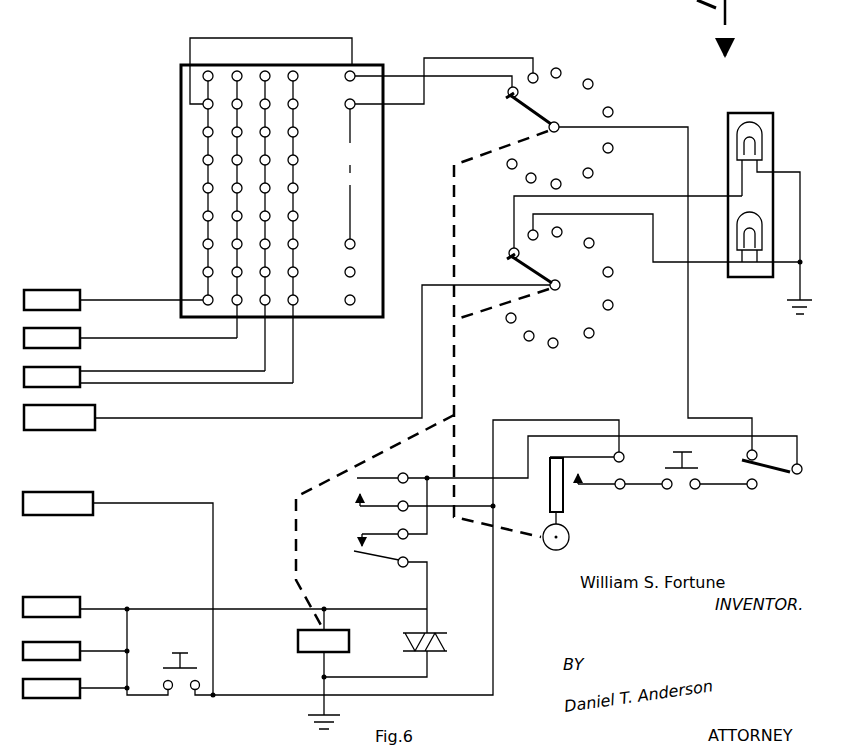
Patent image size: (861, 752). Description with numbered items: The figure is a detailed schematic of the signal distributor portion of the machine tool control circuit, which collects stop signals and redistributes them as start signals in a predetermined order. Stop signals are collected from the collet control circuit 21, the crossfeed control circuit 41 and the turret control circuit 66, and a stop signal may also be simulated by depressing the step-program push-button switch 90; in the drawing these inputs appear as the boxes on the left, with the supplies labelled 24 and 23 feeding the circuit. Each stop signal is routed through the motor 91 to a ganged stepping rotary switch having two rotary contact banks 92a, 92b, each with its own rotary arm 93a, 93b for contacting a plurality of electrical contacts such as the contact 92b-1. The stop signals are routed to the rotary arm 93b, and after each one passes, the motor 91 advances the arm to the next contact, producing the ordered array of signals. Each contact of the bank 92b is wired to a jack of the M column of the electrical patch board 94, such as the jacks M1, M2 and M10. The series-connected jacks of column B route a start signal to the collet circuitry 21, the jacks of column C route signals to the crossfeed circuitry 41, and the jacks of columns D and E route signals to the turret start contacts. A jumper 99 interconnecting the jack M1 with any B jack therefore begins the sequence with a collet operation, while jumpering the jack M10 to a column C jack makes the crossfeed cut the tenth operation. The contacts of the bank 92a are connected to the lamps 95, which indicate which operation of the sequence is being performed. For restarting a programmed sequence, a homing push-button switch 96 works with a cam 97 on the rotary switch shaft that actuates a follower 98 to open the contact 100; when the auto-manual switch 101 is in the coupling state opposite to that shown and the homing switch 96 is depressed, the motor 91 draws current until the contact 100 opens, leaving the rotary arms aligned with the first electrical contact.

The electrical patch board 94 is at (178, 151).
The jumper 99 is at (228, 38).
The M column jacks M is at (365, 66).
The jack M1 is at (345, 81).
The jack M2 is at (346, 108).
The jack M10 is at (346, 268).
The column B jacks B is at (217, 69).
The column C jacks C is at (246, 69).
The column D jacks D is at (274, 69).
The column E jacks E is at (302, 69).
The rotary contact bank 92b is at (604, 95).
The electrical contact 92b-1 is at (520, 90).
The rotary arm 93b is at (531, 108).
The rotary contact bank 92a is at (610, 323).
The rotary arm 93a is at (534, 270).
The lamps 95 is at (765, 152).
The collet control circuit 21 is at (40, 290).
The crossfeed control circuit 41 is at (80, 333).
The turret control circuit 66 is at (78, 368).
The 115 VAC supply 24 is at (88, 406).
The 24 VDC supply 23 is at (66, 492).
The step-program push-button switch 90 is at (161, 661).
The motor 91 is at (372, 668).
The cam 97 is at (546, 548).
The follower 98 is at (566, 498).
The contact 100 is at (603, 487).
The homing push-button switch 96 is at (680, 487).
The auto-manual switch 101 is at (767, 476).